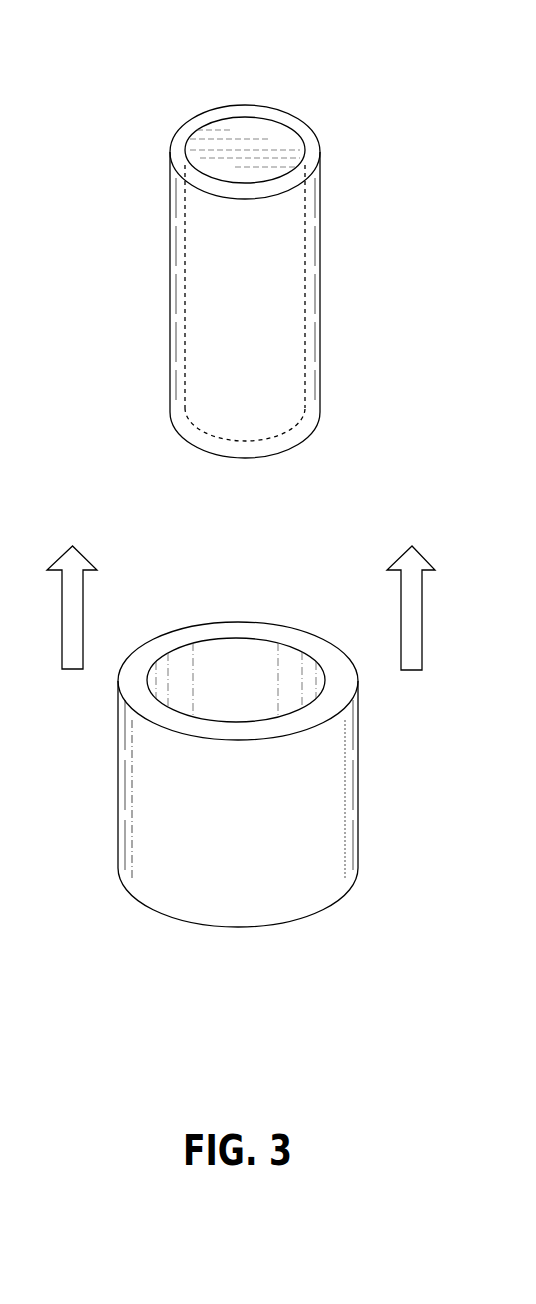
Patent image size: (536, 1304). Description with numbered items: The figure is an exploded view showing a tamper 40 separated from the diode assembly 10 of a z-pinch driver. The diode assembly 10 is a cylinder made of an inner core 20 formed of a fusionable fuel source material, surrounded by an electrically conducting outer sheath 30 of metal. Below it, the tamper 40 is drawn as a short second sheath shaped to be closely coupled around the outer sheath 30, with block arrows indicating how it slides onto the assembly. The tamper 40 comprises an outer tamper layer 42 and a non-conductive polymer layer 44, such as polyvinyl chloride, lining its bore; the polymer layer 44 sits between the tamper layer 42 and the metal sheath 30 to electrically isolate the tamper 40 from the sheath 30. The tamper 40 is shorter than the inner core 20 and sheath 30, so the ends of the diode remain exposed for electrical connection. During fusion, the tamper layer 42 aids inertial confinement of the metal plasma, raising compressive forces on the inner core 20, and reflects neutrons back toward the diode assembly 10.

The diode assembly 10 is at (268, 230).
The inner core 20 is at (208, 150).
The electrically conducting outer sheath 30 is at (320, 293).
The tamper 40 is at (281, 810).
The tamper layer 42 is at (358, 813).
The non-conductive polymer layer 44 is at (205, 648).